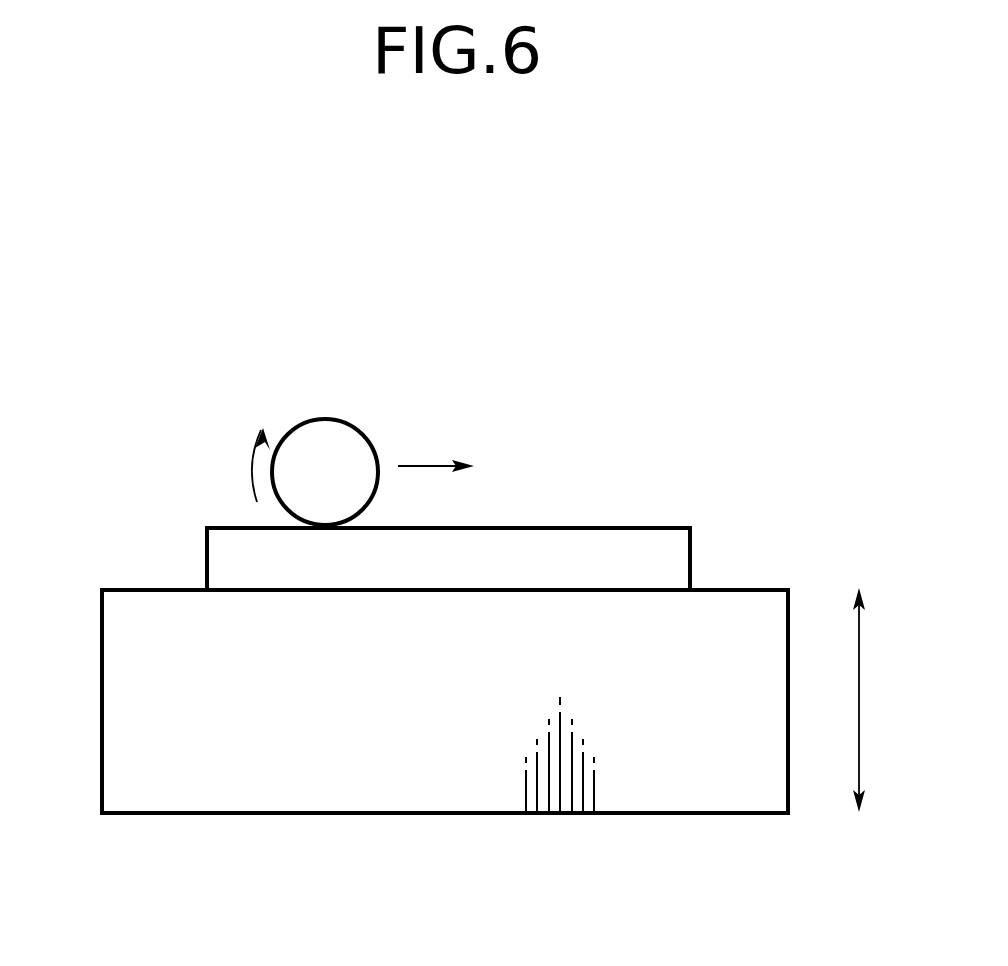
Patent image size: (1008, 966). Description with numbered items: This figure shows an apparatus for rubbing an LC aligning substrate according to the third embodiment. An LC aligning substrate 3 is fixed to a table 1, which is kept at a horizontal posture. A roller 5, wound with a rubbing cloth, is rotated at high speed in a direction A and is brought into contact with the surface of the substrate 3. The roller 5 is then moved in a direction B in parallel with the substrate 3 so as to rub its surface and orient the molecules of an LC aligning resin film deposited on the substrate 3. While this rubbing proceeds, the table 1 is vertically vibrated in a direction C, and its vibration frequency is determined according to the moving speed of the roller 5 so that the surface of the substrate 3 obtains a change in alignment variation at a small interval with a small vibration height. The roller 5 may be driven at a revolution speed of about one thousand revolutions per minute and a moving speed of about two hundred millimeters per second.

The table 1 is at (100, 643).
The LC aligning substrate 3 is at (692, 545).
The roller 5 is at (337, 418).
The direction A is at (252, 472).
The direction B is at (423, 465).
The direction C is at (860, 683).